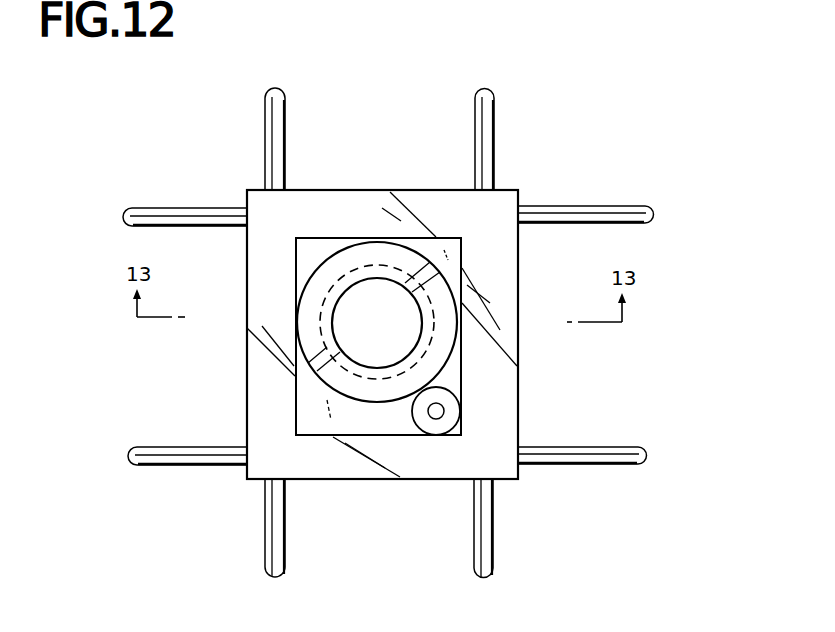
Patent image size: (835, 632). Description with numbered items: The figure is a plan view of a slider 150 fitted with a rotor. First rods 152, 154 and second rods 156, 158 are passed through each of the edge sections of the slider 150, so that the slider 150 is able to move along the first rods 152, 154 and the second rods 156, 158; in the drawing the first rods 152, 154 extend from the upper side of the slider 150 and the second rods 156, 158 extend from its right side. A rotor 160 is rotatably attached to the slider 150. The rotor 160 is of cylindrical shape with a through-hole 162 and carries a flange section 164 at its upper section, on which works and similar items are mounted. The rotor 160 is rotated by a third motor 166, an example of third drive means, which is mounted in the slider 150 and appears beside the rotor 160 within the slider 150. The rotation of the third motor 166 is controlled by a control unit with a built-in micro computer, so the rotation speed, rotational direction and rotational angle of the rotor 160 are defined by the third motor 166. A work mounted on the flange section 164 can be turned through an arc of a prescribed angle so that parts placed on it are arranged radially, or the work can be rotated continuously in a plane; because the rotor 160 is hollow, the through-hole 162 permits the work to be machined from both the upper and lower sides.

The slider 150 is at (521, 188).
The first rod 152 is at (285, 160).
The first rod 154 is at (475, 157).
The second rod 156 is at (633, 205).
The second rod 158 is at (607, 447).
The rotor 160 is at (304, 380).
The through-hole 162 is at (412, 339).
The flange section 164 is at (360, 392).
The third motor 166 is at (437, 430).